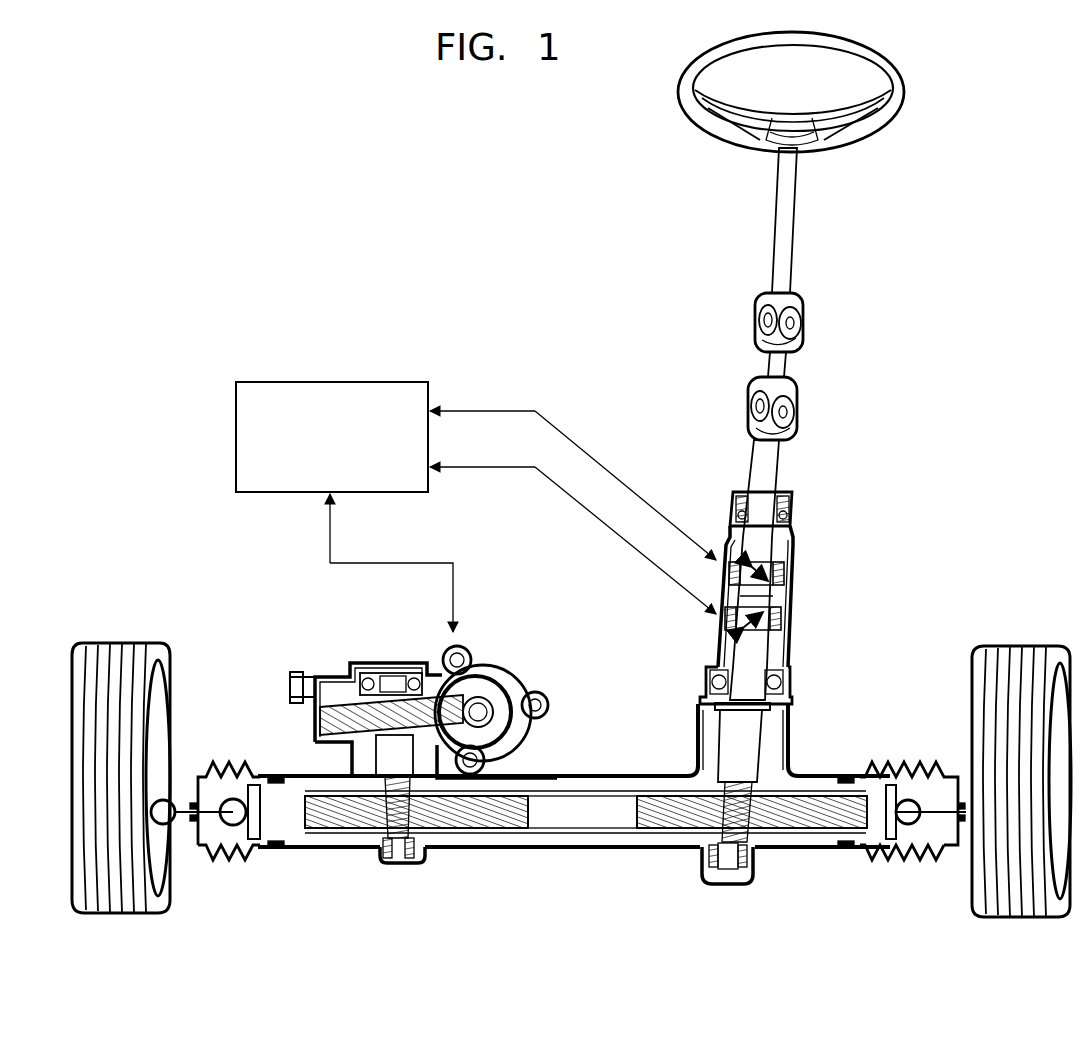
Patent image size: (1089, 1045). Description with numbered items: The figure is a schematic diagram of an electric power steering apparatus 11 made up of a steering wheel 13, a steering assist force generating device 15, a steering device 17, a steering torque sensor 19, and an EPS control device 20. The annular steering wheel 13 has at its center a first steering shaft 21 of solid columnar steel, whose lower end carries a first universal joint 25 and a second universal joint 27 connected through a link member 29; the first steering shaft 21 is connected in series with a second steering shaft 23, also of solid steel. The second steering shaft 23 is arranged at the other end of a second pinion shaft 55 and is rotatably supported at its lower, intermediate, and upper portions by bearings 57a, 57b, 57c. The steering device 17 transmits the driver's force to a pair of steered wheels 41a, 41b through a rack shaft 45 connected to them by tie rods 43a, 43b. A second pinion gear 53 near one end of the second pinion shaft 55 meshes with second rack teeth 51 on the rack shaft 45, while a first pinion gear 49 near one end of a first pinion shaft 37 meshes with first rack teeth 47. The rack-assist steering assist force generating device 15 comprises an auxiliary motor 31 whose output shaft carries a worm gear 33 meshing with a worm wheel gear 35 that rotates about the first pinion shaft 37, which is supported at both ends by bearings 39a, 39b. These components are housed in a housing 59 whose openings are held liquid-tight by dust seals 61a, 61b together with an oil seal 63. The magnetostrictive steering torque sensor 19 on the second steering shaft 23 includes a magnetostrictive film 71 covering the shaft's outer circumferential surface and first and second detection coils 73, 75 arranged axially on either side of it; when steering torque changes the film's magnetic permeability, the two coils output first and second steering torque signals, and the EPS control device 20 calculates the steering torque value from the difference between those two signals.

The electric power steering apparatus 11 is at (1022, 94).
The steering wheel 13 is at (903, 78).
The steering assist force generating device 15 is at (502, 641).
The steering device 17 is at (614, 864).
The steering torque sensor 19 is at (896, 565).
The EPS control device 20 is at (373, 382).
The first steering shaft 21 is at (788, 213).
The second steering shaft 23 is at (752, 660).
The first universal joint 25 is at (803, 303).
The second universal joint 27 is at (800, 416).
The link member 29 is at (789, 360).
The auxiliary motor 31 is at (512, 742).
The worm gear 33 is at (478, 697).
The worm wheel gear 35 is at (318, 718).
The first pinion shaft 37 is at (395, 757).
The bearing 39a is at (385, 855).
The bearing 39b is at (372, 682).
The steered wheel 41a is at (1015, 650).
The steered wheel 41b is at (118, 650).
The tie rod 43a is at (942, 820).
The tie rod 43b is at (197, 845).
The rack shaft 45 is at (597, 824).
The first rack teeth 47 is at (500, 836).
The first pinion gear 49 is at (440, 840).
The second rack teeth 51 is at (820, 848).
The second pinion gear 53 is at (703, 845).
The second pinion shaft 55 is at (748, 760).
The bearing 57a is at (751, 872).
The bearing 57b is at (793, 686).
The bearing 57c is at (793, 513).
The housing 59 is at (640, 850).
The dust seal 61a is at (900, 862).
The dust seal 61b is at (219, 862).
The oil seal 63 is at (793, 490).
The magnetostrictive film 71 is at (762, 601).
The first detection coil 73 is at (784, 578).
The second detection coil 75 is at (786, 620).